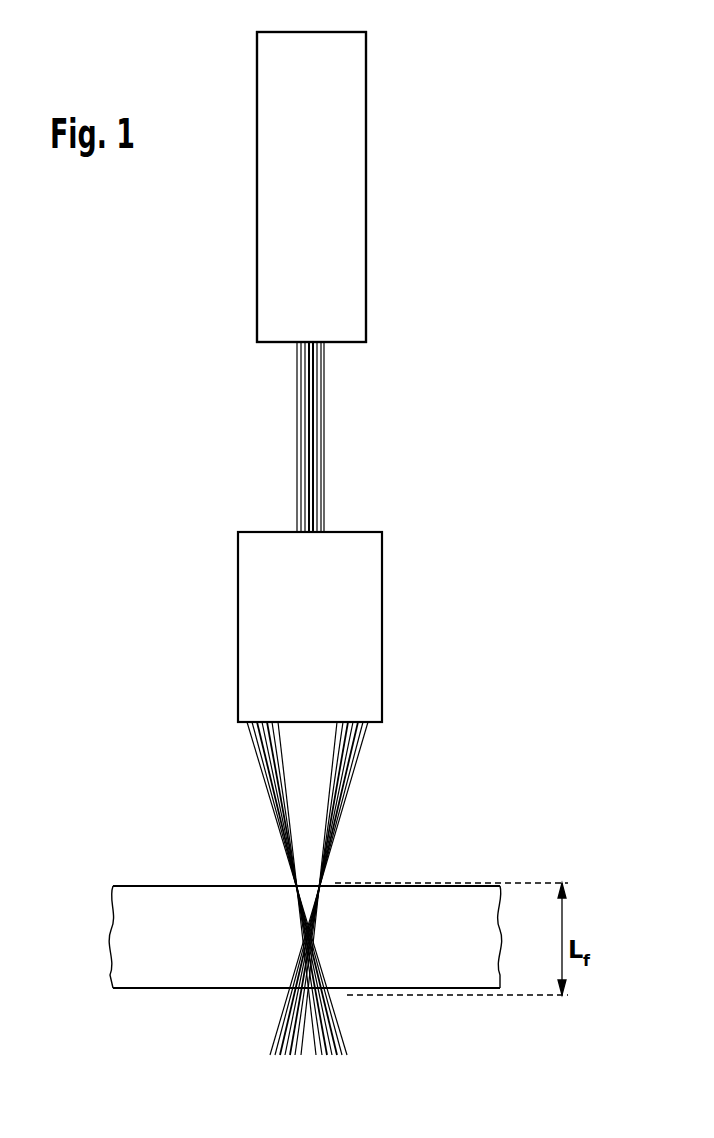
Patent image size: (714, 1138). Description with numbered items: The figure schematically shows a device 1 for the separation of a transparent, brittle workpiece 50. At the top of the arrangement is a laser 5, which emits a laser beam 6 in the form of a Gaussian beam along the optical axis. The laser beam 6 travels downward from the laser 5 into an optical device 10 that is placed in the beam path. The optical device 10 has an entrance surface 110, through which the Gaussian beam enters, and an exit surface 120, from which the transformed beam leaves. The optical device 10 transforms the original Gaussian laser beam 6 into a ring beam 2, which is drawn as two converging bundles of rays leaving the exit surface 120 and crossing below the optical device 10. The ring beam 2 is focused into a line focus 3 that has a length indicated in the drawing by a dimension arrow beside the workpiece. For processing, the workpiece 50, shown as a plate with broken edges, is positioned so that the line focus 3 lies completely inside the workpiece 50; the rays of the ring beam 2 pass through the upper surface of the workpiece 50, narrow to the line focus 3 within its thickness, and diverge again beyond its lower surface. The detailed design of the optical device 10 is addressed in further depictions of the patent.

The device 1 is at (421, 91).
The laser 5 is at (340, 190).
The laser beam 6 is at (316, 436).
The optical device 10 is at (350, 625).
The entrance surface 110 is at (254, 532).
The exit surface 120 is at (246, 725).
The ring beam 2 is at (278, 805).
The line focus 3 is at (293, 956).
The workpiece 50 is at (163, 966).